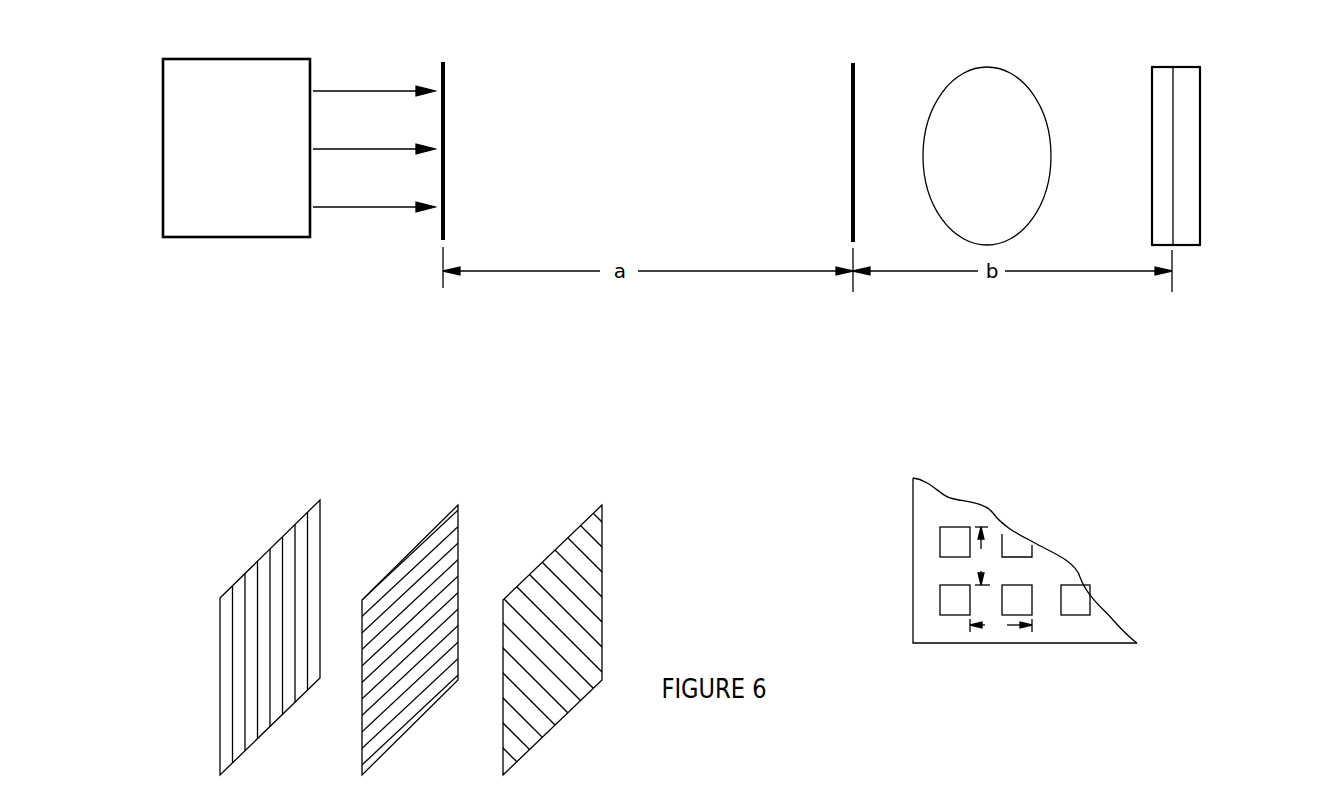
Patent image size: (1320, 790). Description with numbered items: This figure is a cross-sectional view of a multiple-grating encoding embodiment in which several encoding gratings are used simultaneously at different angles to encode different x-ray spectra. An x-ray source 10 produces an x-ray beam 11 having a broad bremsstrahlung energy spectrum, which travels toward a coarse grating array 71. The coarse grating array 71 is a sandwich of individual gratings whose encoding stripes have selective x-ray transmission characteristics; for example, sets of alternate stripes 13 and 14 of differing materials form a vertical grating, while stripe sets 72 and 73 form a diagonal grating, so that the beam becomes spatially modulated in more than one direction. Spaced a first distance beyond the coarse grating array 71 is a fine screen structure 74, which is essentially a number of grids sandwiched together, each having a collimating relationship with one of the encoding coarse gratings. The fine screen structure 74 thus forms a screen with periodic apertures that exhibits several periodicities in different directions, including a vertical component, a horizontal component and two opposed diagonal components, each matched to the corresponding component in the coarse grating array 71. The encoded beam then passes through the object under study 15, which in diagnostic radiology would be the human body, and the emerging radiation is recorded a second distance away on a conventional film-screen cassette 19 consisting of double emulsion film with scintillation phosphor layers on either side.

The x-ray source 10 is at (230, 59).
The x-ray beam 11 is at (357, 208).
The alternate stripes 13 is at (249, 637).
The alternate stripes 14 is at (312, 507).
The object under study 15 is at (1000, 68).
The film-screen cassette 19 is at (1200, 101).
The coarse grating array 71 is at (446, 63).
The stripe set 72 is at (550, 580).
The stripe set 73 is at (585, 518).
The fine screen structure 74 is at (855, 69).